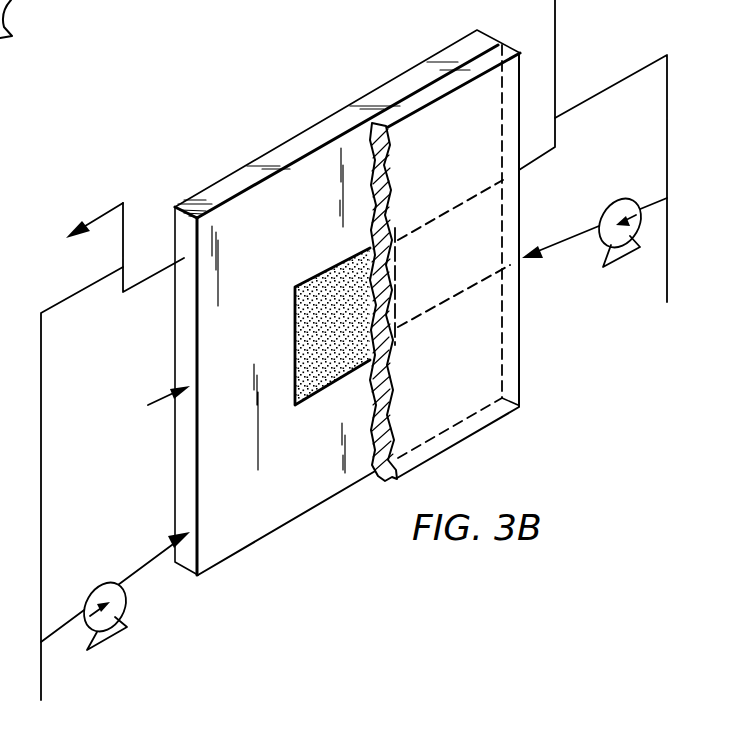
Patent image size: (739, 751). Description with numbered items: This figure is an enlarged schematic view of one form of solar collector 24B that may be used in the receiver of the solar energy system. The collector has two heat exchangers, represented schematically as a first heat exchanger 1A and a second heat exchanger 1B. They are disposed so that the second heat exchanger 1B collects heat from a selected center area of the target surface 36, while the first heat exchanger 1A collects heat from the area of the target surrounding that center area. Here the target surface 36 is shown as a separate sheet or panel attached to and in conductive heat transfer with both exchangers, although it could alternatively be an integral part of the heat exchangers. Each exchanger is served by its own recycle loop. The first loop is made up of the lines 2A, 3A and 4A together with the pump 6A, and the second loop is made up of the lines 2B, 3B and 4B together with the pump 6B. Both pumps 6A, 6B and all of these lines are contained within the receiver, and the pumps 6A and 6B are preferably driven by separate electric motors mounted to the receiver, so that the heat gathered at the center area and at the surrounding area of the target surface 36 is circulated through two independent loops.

The heat exchanger 1A is at (285, 155).
The heat exchanger 1B is at (295, 307).
The line 2A is at (154, 280).
The line 3A is at (41, 365).
The direction of flow into slab 24B is at (145, 401).
The line 4A is at (142, 560).
The pump 6A is at (92, 597).
The line 2B is at (555, 148).
The line 3B is at (667, 127).
The pump 6B is at (622, 198).
The line 4B is at (560, 237).
The target surface 36 is at (510, 349).